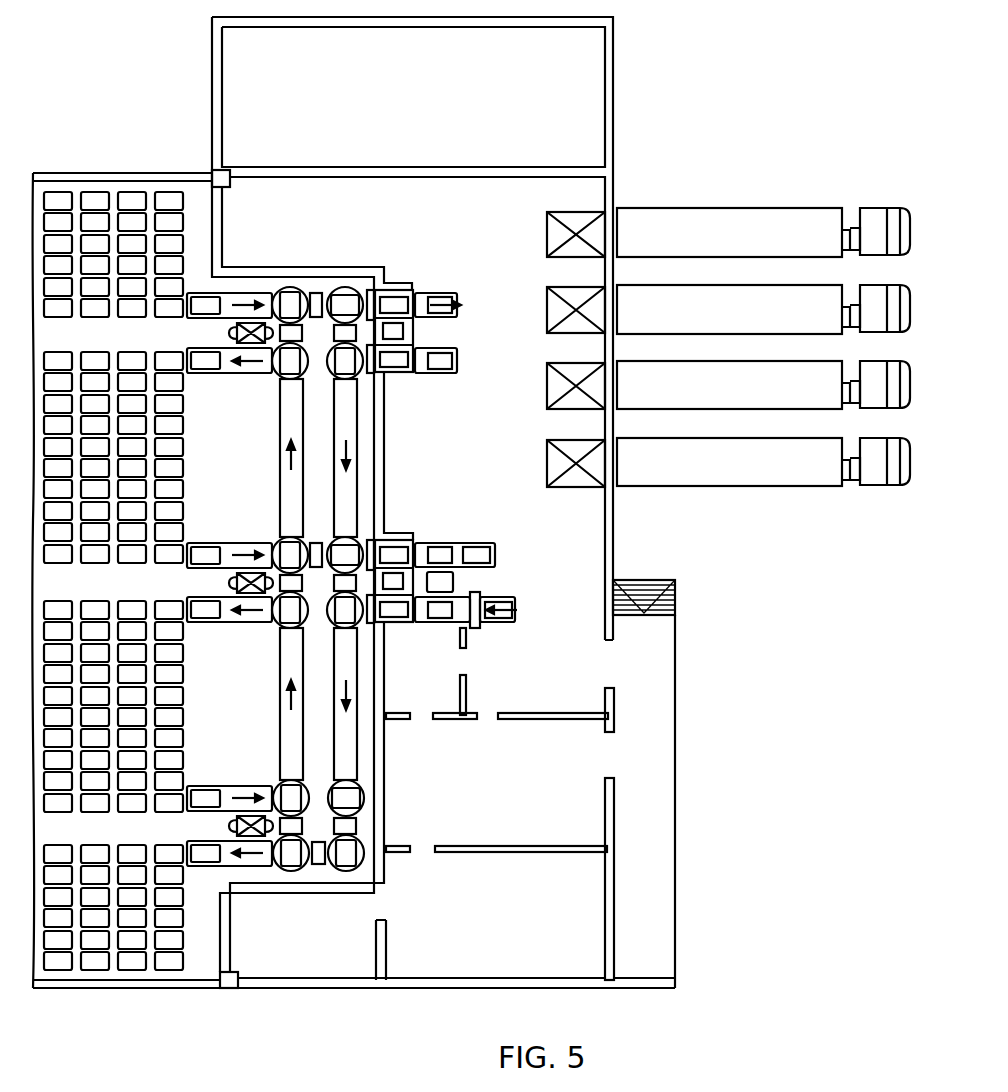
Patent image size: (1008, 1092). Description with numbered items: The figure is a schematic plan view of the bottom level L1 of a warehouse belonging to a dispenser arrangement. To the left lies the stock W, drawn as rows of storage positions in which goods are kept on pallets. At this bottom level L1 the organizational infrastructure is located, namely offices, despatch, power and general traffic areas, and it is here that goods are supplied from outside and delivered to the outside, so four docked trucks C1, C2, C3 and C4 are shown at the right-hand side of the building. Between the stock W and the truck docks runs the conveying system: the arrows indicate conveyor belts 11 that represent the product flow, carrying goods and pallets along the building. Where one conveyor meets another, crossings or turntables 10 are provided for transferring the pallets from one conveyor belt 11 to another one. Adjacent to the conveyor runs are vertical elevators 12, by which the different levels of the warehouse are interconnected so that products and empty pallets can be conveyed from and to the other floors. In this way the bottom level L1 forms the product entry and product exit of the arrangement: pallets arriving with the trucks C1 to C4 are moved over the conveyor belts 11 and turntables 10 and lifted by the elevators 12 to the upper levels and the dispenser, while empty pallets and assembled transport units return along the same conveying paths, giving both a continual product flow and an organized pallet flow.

The crossings or turntables 10 is at (277, 292).
The conveyor belts 11 is at (291, 412).
The vertical elevators 12 is at (394, 290).
The stock W is at (101, 160).
The docked truck C1 is at (728, 213).
The docked truck C2 is at (746, 321).
The docked truck C3 is at (746, 397).
The docked truck C4 is at (725, 478).
The bottom level L1 is at (694, 680).